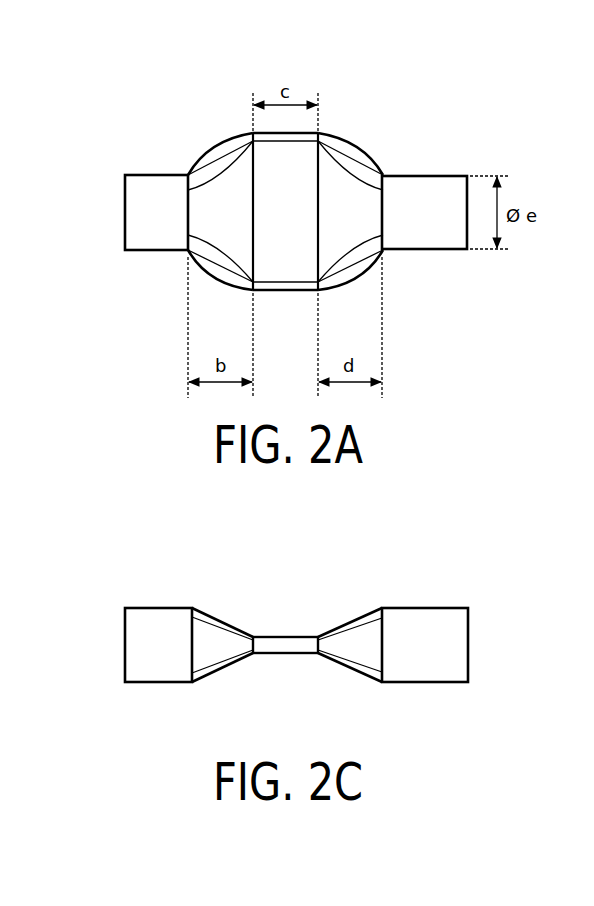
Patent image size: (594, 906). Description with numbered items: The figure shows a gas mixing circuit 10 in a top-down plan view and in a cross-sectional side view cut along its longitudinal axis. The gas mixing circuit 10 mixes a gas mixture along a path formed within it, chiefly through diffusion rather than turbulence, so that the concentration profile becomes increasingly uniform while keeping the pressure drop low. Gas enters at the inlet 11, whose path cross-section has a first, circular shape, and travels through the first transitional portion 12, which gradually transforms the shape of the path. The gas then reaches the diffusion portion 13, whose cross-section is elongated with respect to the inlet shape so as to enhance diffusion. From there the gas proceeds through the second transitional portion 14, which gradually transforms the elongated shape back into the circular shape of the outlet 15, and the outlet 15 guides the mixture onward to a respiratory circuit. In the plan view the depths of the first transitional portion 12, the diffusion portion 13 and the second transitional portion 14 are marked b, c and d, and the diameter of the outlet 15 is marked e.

In FIG. 2A, the gas mixing circuit 10 is at (104, 92).
In FIG. 2C, the gas mixing circuit 10 is at (104, 550).
In FIG. 2A, the inlet 11 is at (152, 175).
In FIG. 2C, the inlet 11 is at (162, 607).
In FIG. 2A, the first transitional portion 12 is at (236, 224).
In FIG. 2C, the first transitional portion 12 is at (223, 632).
In FIG. 2A, the diffusion portion 13 is at (298, 224).
In FIG. 2C, the diffusion portion 13 is at (281, 646).
In FIG. 2A, the second transitional portion 14 is at (358, 224).
In FIG. 2C, the second transitional portion 14 is at (357, 634).
In FIG. 2A, the outlet 15 is at (440, 176).
In FIG. 2C, the outlet 15 is at (432, 607).